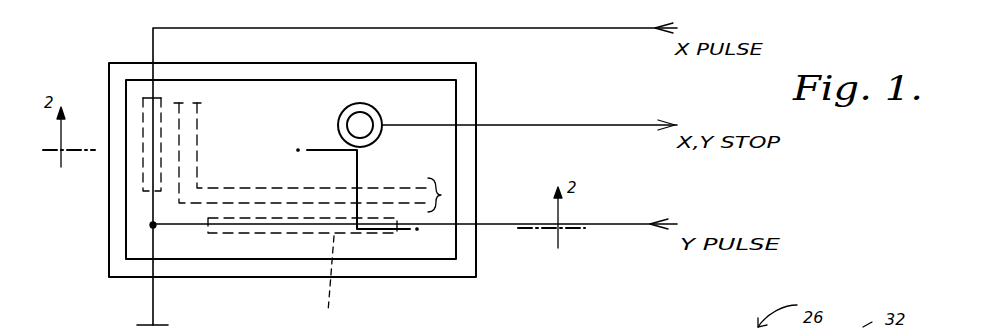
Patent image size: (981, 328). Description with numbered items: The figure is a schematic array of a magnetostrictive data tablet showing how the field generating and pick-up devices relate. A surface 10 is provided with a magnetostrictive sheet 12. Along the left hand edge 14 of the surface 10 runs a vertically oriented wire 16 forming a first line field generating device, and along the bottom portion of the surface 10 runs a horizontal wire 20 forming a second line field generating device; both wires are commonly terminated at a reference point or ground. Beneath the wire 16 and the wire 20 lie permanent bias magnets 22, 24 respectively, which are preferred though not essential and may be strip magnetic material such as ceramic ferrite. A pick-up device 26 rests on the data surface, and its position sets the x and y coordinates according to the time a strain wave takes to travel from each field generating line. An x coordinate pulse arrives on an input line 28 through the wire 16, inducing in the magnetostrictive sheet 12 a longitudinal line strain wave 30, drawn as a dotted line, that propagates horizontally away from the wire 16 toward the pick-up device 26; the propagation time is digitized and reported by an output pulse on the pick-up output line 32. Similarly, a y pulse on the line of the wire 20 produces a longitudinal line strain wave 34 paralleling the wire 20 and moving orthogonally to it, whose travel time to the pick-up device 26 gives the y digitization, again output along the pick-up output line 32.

The surface 10 is at (363, 55).
The magnetostrictive sheet 12 is at (443, 97).
The left hand edge 14 is at (126, 199).
The vertically oriented wire 16 is at (152, 205).
The horizontal wire 20 is at (193, 226).
The permanent bias magnet 22 is at (145, 98).
The permanent bias magnet 24 is at (343, 282).
The pick-up device 26 is at (338, 121).
The input line 28 is at (575, 28).
The strain wave 30 is at (187, 104).
The pick-up output line 32 is at (587, 125).
The longitudinal line strain wave 34 is at (441, 195).